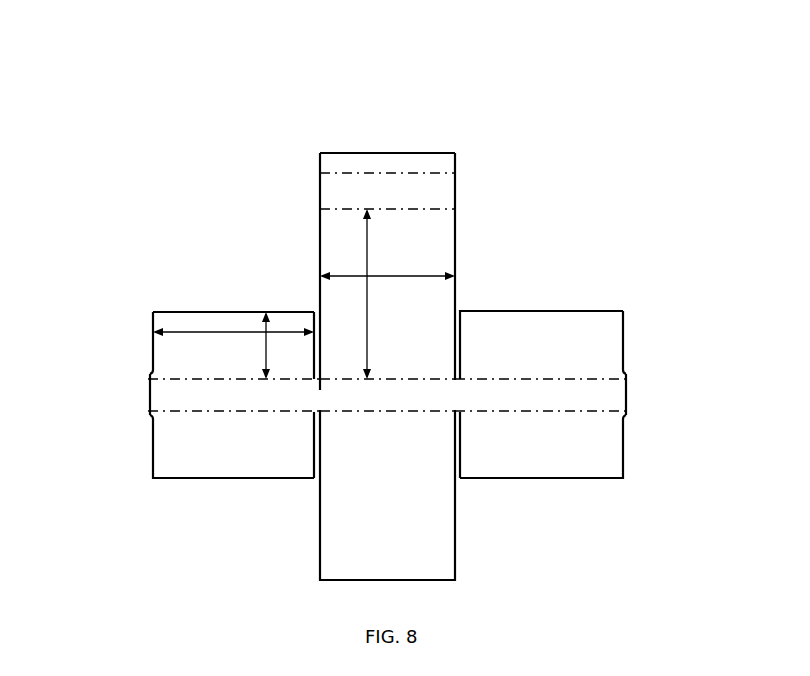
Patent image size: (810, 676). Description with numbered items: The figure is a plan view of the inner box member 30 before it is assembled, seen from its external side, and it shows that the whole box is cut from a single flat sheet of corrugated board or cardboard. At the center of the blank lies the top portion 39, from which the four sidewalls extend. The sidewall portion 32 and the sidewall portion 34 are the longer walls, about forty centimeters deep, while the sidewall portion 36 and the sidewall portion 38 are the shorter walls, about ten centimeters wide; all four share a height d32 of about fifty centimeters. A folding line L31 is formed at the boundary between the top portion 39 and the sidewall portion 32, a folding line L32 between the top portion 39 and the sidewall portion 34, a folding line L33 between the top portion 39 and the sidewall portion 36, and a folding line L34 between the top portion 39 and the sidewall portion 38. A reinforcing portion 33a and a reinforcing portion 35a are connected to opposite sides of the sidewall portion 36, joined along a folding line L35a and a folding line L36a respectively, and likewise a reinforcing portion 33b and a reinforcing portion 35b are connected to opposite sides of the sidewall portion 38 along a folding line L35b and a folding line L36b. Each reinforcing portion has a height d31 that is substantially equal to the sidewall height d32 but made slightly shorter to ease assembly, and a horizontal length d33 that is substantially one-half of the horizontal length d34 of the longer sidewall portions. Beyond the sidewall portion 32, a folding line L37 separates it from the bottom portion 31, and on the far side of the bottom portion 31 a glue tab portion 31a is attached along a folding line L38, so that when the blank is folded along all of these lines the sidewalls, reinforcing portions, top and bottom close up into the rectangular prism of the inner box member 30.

The inner box member 30 is at (452, 86).
The bottom portion 31 is at (432, 190).
The glue tab portion 31a is at (432, 161).
The sidewall portion 32 is at (442, 245).
The sidewall portion 34 is at (396, 522).
The reinforcing portion 33a is at (162, 352).
The reinforcing portion 33b is at (612, 349).
The reinforcing portion 35a is at (163, 445).
The reinforcing portion 35b is at (612, 446).
The sidewall portion 36 is at (160, 394).
The sidewall portion 38 is at (612, 393).
The top portion 39 is at (357, 392).
The folding line L31 is at (443, 370).
The folding line L32 is at (323, 413).
The folding line L33 is at (320, 398).
The folding line L34 is at (478, 388).
The folding line L35a is at (197, 379).
The folding line L35b is at (595, 377).
The folding line L36a is at (180, 417).
The folding line L36b is at (592, 413).
The folding line L37 is at (355, 209).
The folding line L38 is at (414, 173).
The height of reinforcing portion d31 is at (233, 340).
The height of sidewall portion d32 is at (381, 294).
The horizontal length of reinforcing portion d33 is at (280, 345).
The horizontal length of sidewall portion d34 is at (387, 268).